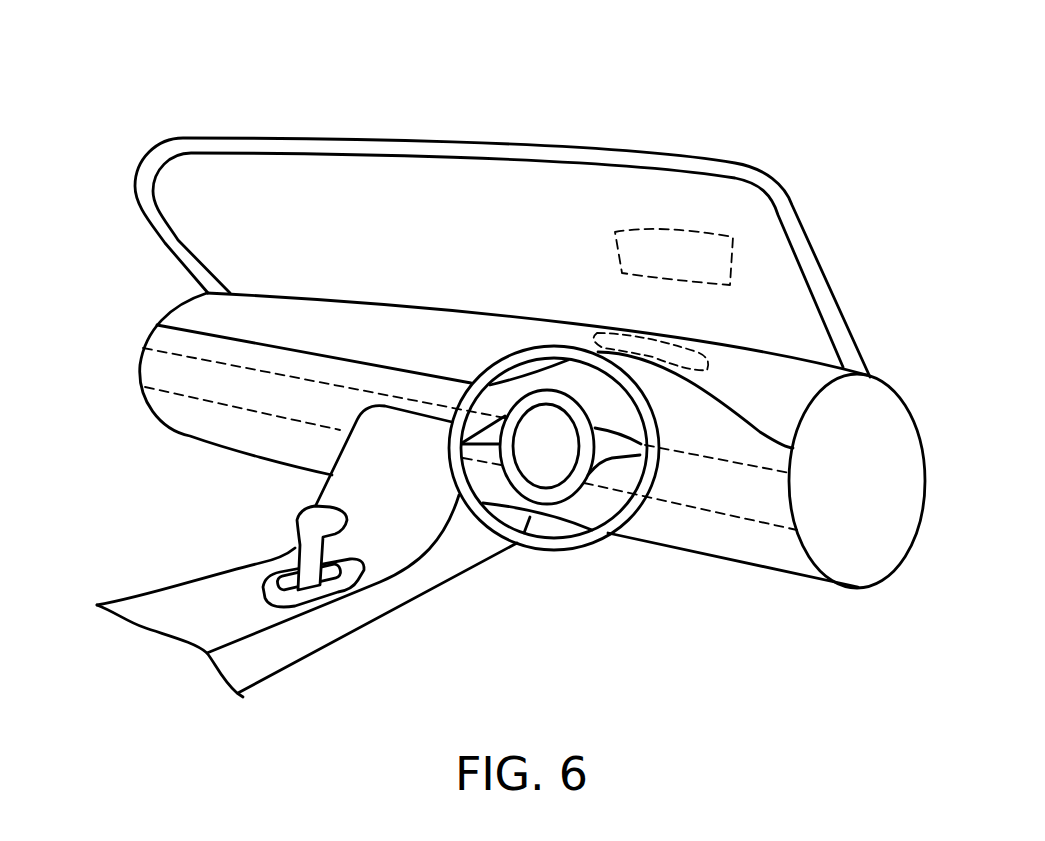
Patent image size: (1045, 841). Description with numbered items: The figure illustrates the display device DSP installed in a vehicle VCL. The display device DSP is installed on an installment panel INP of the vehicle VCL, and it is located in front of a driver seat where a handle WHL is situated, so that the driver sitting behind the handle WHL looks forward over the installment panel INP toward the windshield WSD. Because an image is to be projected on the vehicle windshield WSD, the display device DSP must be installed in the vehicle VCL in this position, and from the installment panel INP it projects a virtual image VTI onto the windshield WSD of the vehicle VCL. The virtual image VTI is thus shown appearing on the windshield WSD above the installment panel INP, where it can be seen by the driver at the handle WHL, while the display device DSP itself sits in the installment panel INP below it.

The vehicle VCL is at (118, 98).
The windshield WSD is at (533, 182).
The virtual image VTI is at (717, 225).
The display device DSP is at (703, 353).
The installment panel INP is at (752, 383).
The handle WHL is at (588, 547).